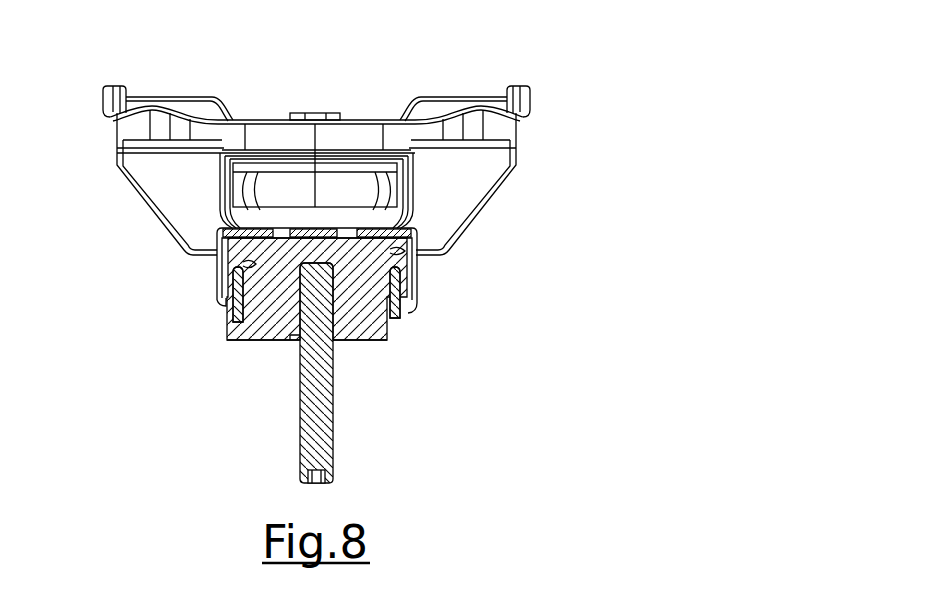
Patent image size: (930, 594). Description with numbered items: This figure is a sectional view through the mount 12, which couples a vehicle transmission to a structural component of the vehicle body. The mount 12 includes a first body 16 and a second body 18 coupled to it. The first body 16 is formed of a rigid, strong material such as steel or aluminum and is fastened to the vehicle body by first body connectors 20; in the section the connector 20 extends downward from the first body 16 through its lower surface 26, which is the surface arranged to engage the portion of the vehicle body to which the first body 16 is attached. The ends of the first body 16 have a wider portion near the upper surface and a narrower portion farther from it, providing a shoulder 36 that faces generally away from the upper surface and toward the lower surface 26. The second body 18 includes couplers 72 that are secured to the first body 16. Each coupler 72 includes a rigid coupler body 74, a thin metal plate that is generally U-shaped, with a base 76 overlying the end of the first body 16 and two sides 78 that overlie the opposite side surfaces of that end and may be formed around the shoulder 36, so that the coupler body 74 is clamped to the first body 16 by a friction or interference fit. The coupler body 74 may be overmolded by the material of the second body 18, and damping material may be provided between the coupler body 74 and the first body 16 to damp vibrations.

The mount 12 is at (581, 51).
The second body 18 is at (530, 137).
The coupler 72 is at (213, 263).
The coupler body 74 is at (393, 232).
The base 76 is at (322, 233).
The first body 16 is at (270, 333).
The lower surface 26 is at (364, 341).
The shoulder 36 is at (243, 264).
The sides 78 is at (252, 270).
The first body connectors 20 is at (312, 387).